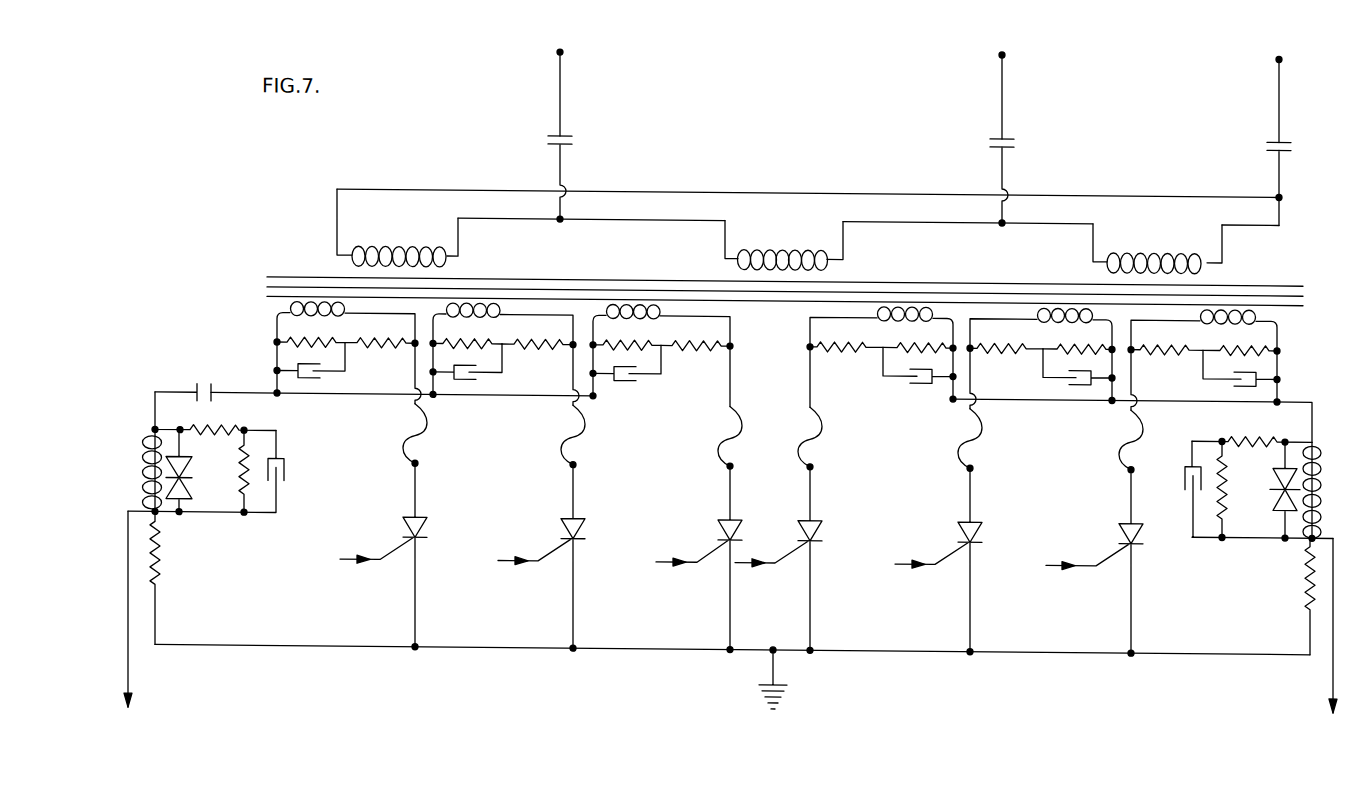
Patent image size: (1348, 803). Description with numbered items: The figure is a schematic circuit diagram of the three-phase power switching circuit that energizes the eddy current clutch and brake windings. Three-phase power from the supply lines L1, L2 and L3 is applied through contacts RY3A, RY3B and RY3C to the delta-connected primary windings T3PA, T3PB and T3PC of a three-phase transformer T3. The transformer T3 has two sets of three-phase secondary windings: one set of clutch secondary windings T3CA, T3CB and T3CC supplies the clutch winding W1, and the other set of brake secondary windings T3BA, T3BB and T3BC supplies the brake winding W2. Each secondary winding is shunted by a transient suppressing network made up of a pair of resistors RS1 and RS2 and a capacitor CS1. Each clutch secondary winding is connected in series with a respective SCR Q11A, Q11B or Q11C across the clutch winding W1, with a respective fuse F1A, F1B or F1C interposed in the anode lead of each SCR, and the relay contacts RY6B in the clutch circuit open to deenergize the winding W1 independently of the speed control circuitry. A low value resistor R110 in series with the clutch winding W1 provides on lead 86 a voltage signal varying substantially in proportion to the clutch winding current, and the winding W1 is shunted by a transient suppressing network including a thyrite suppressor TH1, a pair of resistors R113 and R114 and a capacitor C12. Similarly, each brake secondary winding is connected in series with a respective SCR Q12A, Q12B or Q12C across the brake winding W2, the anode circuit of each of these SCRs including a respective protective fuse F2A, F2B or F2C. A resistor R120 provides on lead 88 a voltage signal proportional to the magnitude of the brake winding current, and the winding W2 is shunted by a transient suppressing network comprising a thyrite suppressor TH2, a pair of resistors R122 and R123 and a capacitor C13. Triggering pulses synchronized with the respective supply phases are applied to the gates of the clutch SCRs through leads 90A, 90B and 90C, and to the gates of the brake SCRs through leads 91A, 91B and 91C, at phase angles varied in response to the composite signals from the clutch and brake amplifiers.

The supply line L1 is at (560, 118).
The supply line L2 is at (1002, 110).
The supply line L3 is at (1279, 118).
The contact RY3A is at (563, 143).
The contact RY3B is at (1006, 142).
The contact RY3C is at (1274, 148).
The three-phase transformer T3 is at (227, 272).
The primary winding T3PA is at (428, 228).
The primary winding T3PB is at (806, 228).
The primary winding T3PC is at (1176, 228).
The clutch secondary winding T3CA is at (290, 309).
The clutch secondary winding T3CB is at (485, 312).
The clutch secondary winding T3CC is at (633, 312).
The brake secondary winding T3BA is at (893, 312).
The brake secondary winding T3BB is at (1060, 312).
The brake secondary winding T3BC is at (1232, 316).
The resistor RS1 is at (300, 336).
The resistor RS2 is at (362, 336).
The capacitor CS1 is at (320, 374).
The contacts RY6B is at (197, 386).
The resistor R113 is at (228, 428).
The resistor R114 is at (240, 480).
The clutch winding W1 is at (143, 468).
The thyrite suppressor TH1 is at (190, 502).
The capacitor C12 is at (285, 478).
The low value resistor R110 is at (160, 574).
The lead 86 is at (131, 688).
The fuse F1A is at (426, 434).
The fuse F1B is at (585, 430).
The fuse F1C is at (724, 450).
The protective fuse F2A is at (822, 430).
The protective fuse F2B is at (982, 428).
The protective fuse F2C is at (1126, 440).
The SCR Q11A is at (418, 527).
The SCR Q11B is at (575, 527).
The SCR Q11C is at (726, 527).
The SCR Q12A is at (813, 527).
The SCR Q12B is at (973, 527).
The SCR Q12C is at (1128, 532).
The lead 90A is at (384, 558).
The lead 90B is at (550, 558).
The lead 90C is at (706, 570).
The lead 91A is at (788, 568).
The lead 91B is at (935, 560).
The lead 91C is at (1075, 570).
The resistor R122 is at (1252, 431).
The resistor R123 is at (1236, 482).
The capacitor C13 is at (1186, 478).
The thyrite suppressor TH2 is at (1278, 490).
The brake winding W2 is at (1321, 452).
The resistor R120 is at (1300, 572).
The lead 88 is at (1331, 690).